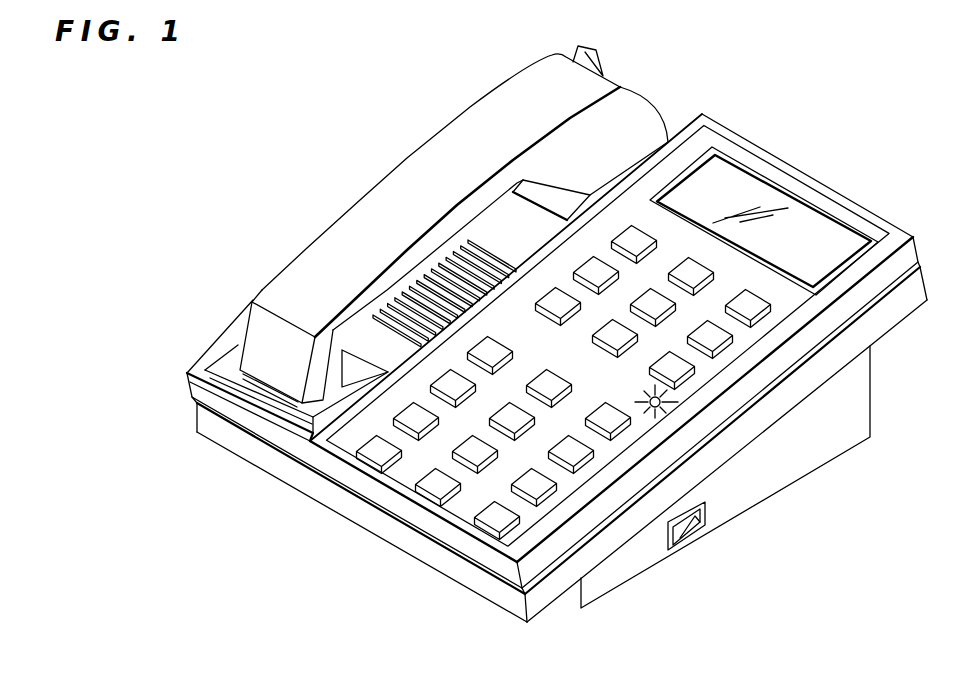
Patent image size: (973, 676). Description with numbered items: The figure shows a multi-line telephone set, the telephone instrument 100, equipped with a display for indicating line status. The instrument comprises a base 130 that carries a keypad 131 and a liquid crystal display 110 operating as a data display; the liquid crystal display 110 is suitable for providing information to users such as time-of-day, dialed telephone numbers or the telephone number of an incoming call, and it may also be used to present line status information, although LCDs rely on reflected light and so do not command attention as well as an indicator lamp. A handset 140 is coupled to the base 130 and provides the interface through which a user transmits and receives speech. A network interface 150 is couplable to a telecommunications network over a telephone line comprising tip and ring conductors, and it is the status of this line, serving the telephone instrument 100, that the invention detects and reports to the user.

The telephone instrument 100 is at (334, 534).
The liquid crystal display 110 is at (725, 178).
The base 130 is at (872, 380).
The keypad 131 is at (563, 503).
The handset 140 is at (372, 216).
The network interface 150 is at (692, 533).